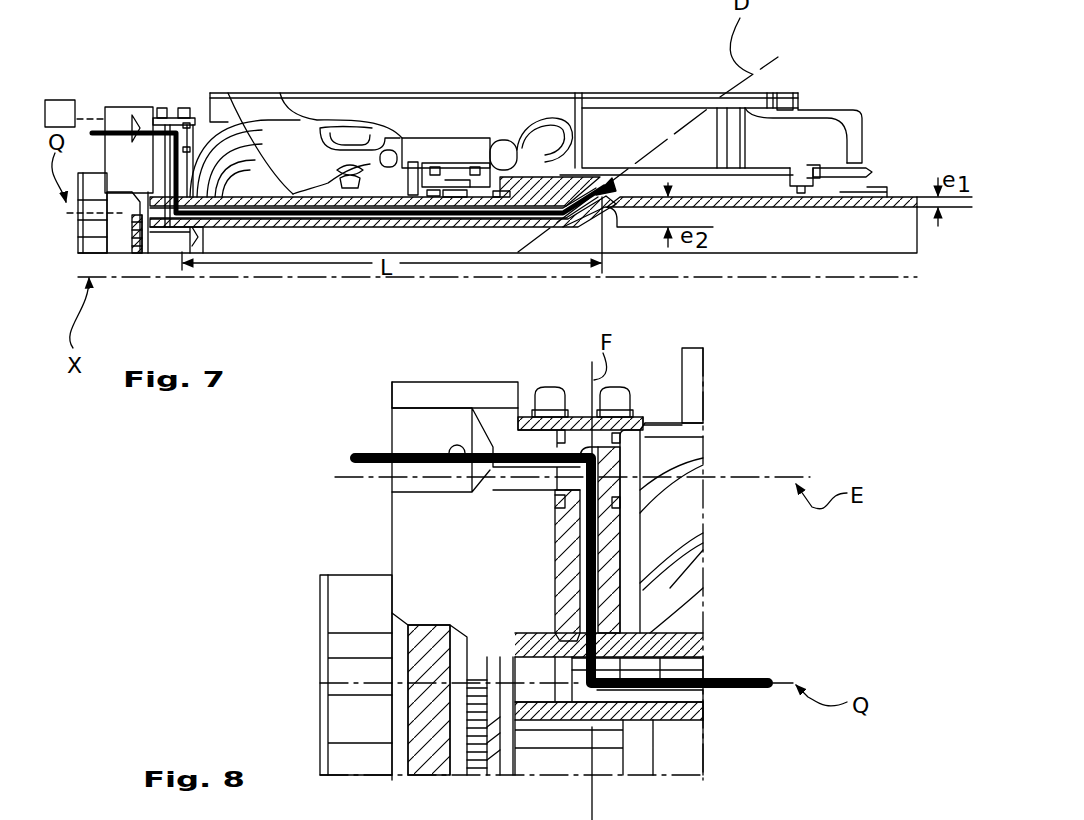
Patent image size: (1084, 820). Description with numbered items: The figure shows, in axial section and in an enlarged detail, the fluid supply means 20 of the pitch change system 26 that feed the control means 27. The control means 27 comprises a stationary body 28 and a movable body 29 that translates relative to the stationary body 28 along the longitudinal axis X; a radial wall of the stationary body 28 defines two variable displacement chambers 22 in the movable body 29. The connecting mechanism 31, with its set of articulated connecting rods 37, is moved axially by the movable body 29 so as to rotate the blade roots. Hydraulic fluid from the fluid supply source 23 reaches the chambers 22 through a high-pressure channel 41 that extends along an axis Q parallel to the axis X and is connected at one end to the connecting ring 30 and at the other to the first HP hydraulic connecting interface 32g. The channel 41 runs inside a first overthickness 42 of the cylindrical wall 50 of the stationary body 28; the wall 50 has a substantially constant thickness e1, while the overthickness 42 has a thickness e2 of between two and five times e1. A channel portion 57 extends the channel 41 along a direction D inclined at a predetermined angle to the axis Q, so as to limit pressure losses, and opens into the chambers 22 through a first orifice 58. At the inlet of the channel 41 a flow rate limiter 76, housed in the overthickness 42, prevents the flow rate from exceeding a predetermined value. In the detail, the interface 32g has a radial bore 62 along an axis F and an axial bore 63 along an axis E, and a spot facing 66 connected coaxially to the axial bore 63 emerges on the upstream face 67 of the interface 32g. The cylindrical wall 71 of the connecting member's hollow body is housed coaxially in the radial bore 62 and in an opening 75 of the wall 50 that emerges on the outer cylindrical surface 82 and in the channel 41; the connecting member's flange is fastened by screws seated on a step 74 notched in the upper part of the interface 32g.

In FIG. 7, the fluid supply means 20 is at (362, 229).
In FIG. 7, the variable displacement chambers 22 is at (792, 181).
In FIG. 7, the fluid supply source 23 is at (62, 110).
In FIG. 7, the pitch change system 26 is at (862, 98).
In FIG. 7, the control means 27 is at (903, 190).
In FIG. 7, the stationary body 28 is at (880, 207).
In FIG. 7, the movable body 29 is at (495, 163).
In FIG. 7, the connecting ring 30 is at (148, 254).
In FIG. 8, the connecting ring 30 is at (488, 648).
In FIG. 7, the connecting mechanism 31 is at (443, 130).
In FIG. 7, the first HP hydraulic connecting interface 32g is at (148, 108).
In FIG. 8, the first HP hydraulic connecting interface 32g is at (420, 543).
In FIG. 7, the articulated connecting rods 37 is at (422, 138).
In FIG. 7, the high-pressure channel 41 is at (495, 220).
In FIG. 8, the high-pressure channel 41 is at (673, 664).
In FIG. 7, the first overthickness 42 is at (606, 214).
In FIG. 7, the cylindrical wall 50 is at (908, 240).
In FIG. 7, the channel portion 57 is at (605, 213).
In FIG. 7, the first orifice 58 is at (607, 186).
In FIG. 8, the radial bore 62 is at (632, 473).
In FIG. 8, the axial bore 63 is at (508, 440).
In FIG. 8, the spot facing 66 is at (442, 422).
In FIG. 8, the upstream face 67 is at (390, 519).
In FIG. 8, the cylindrical wall 71 is at (612, 537).
In FIG. 8, the step 74 is at (540, 445).
In FIG. 8, the opening 75 is at (640, 642).
In FIG. 7, the flow rate limiter 76 is at (228, 224).
In FIG. 8, the flow rate limiter 76 is at (673, 698).
In FIG. 8, the outer cylindrical surface 82 is at (652, 630).